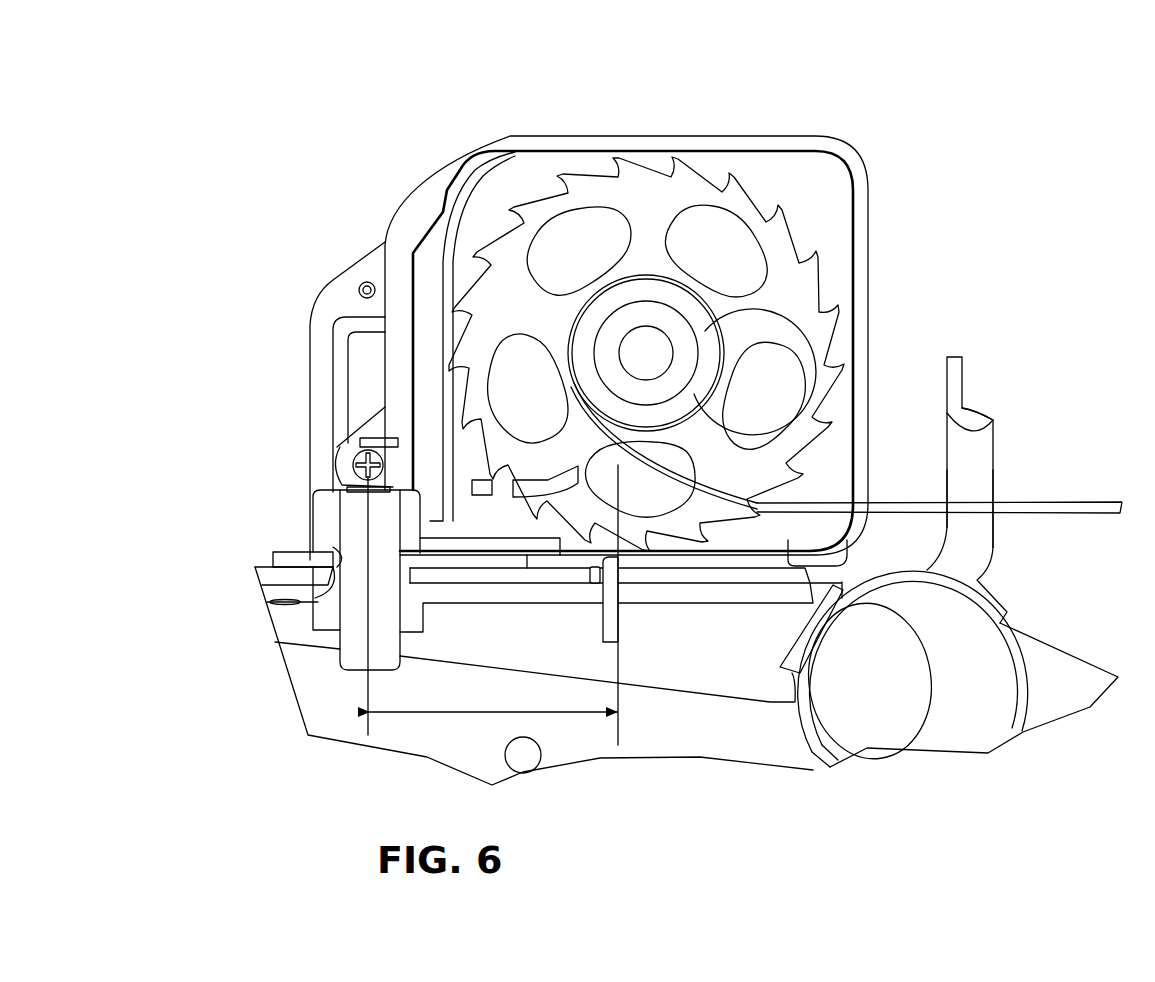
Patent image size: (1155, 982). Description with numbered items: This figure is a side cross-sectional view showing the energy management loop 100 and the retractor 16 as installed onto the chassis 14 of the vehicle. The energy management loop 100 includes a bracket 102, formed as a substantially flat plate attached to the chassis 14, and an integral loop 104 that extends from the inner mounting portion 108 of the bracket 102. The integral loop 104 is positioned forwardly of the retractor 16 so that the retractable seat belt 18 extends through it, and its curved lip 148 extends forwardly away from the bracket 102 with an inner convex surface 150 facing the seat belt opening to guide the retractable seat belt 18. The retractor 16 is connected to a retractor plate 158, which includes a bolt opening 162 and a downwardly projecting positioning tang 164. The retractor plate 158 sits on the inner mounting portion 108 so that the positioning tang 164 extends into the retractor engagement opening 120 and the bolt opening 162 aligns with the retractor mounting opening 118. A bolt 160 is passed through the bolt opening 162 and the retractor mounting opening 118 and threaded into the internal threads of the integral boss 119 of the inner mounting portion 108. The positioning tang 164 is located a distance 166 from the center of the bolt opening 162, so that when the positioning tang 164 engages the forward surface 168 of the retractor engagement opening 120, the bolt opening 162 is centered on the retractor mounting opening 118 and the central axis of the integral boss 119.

The retractor 16 is at (736, 130).
The energy management loop 100 is at (986, 258).
The integral loop 104 is at (1000, 393).
The inner convex surface 150 is at (983, 447).
The curved lip 148 is at (983, 488).
The retractable seat belt 18 is at (1103, 503).
The bolt 160 is at (332, 500).
The bolt opening 162 is at (340, 550).
The retractor plate 158 is at (275, 550).
The inner mounting portion 108 is at (272, 574).
The retractor mounting opening 118 is at (275, 600).
The integral boss 119 is at (323, 620).
The distance 166 is at (493, 695).
The positioning tang 164 is at (608, 625).
The forward surface 168 is at (608, 562).
The retractor engagement opening 120 is at (597, 578).
The bracket 102 is at (688, 590).
The chassis 14 is at (803, 760).